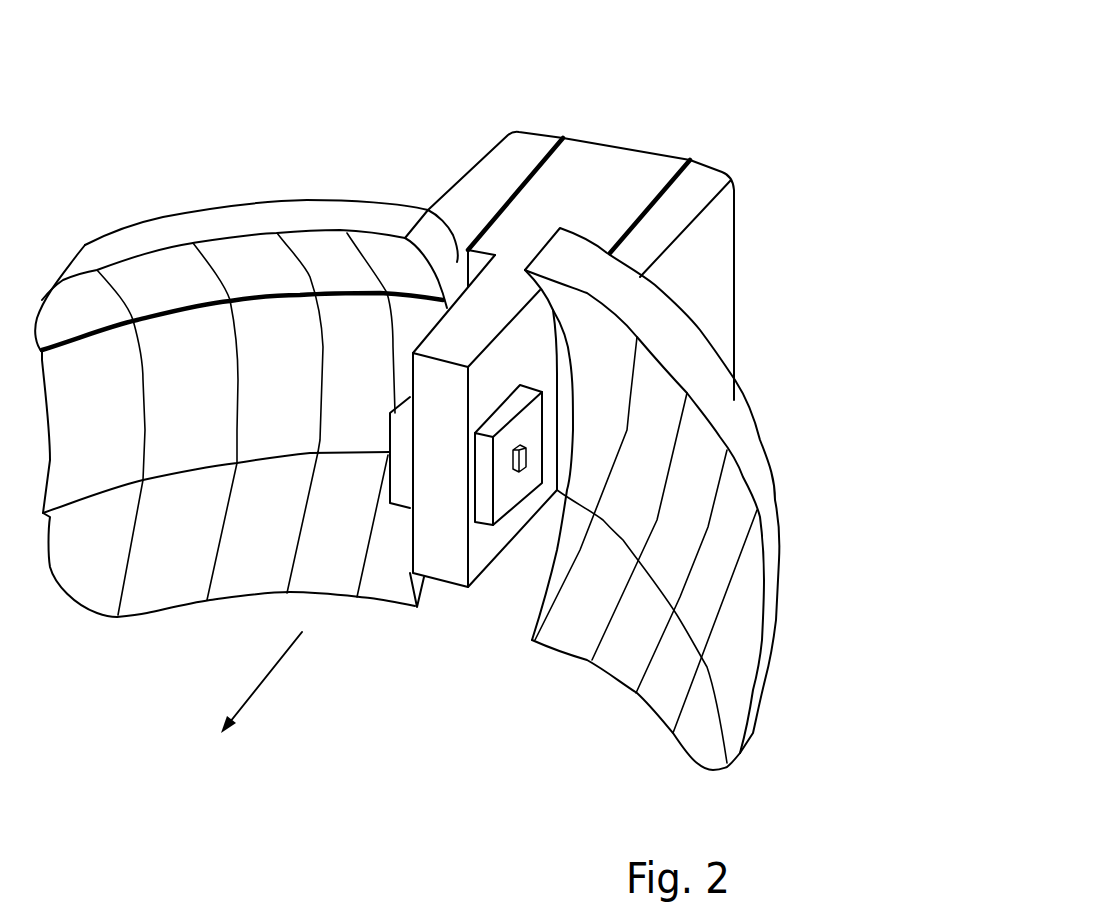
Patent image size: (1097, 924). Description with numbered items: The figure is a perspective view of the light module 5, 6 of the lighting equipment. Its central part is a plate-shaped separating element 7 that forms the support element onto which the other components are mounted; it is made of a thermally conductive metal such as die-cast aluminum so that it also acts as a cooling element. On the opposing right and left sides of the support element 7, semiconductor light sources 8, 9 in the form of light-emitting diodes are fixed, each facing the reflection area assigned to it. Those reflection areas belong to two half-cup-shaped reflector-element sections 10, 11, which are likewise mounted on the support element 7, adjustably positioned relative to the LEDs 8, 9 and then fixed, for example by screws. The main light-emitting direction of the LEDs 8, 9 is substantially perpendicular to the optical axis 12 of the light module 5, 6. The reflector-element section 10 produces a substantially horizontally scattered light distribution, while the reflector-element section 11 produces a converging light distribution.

The light module 5 is at (570, 339).
The light module 6 is at (711, 106).
The plate-shaped separating element 7 is at (613, 163).
The semiconductor light source 8 is at (521, 460).
The semiconductor light source 9 is at (387, 476).
The reflector-element section 10 is at (713, 465).
The reflector-element section 11 is at (243, 252).
The optical axis 12 is at (268, 675).